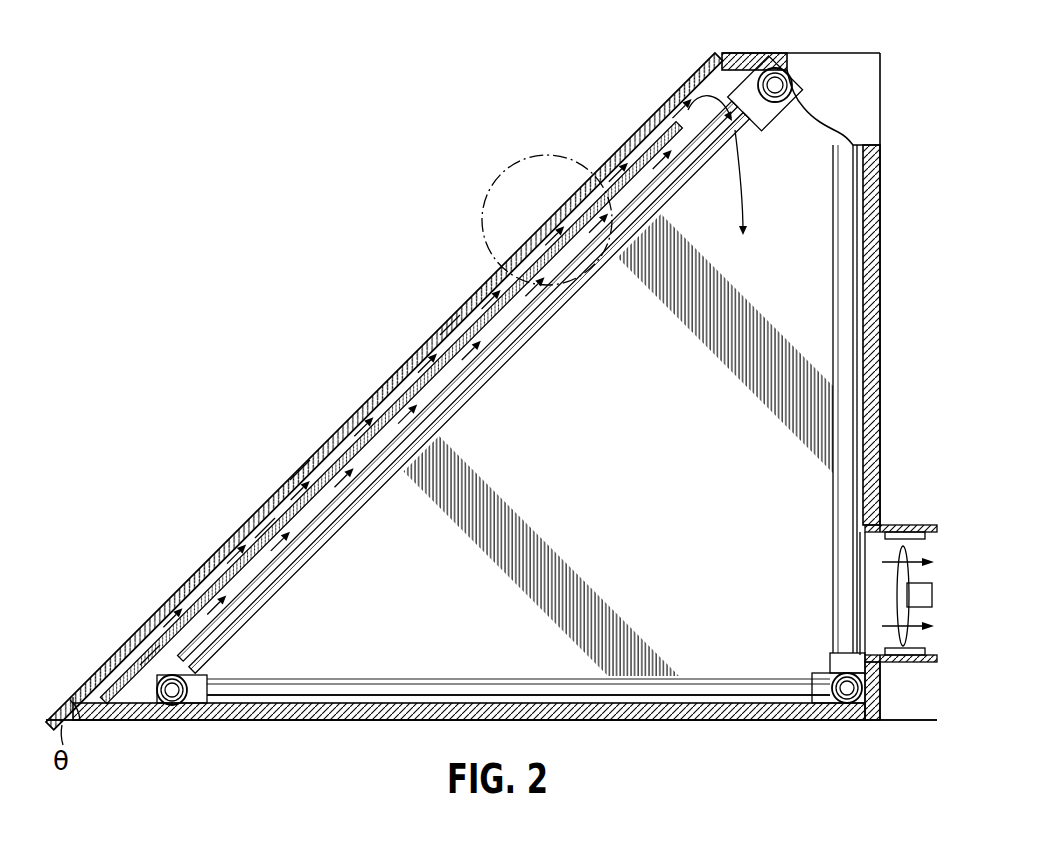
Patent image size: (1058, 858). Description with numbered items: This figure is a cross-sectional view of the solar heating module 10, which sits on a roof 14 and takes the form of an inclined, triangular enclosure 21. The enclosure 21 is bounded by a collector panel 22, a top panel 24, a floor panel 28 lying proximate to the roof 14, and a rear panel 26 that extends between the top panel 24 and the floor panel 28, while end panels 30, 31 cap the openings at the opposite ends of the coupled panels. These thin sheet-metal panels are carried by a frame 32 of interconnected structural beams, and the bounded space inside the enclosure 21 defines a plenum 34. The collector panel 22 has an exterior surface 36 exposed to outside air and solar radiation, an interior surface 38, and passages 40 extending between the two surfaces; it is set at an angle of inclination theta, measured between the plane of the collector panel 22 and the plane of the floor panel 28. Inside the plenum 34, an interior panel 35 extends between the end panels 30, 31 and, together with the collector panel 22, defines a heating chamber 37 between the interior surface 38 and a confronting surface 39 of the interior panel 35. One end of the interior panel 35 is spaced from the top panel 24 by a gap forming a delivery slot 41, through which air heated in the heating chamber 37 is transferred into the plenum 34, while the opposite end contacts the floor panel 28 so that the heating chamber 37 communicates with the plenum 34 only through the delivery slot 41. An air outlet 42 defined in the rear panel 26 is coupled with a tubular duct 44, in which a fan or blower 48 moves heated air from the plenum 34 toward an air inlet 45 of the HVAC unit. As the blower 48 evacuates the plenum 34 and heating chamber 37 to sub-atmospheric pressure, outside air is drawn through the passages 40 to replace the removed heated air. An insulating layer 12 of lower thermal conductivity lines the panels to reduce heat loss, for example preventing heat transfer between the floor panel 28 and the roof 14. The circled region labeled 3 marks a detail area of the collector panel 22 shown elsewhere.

The solar heating module 10 is at (266, 166).
The detail view circle 3 is at (548, 155).
The insulating layer 12 is at (752, 63).
The roof 14 is at (905, 720).
The enclosure 21 is at (450, 330).
The collector panel 22 is at (350, 438).
The top panel 24 is at (775, 62).
The rear panel 26 is at (880, 297).
The floor panel 28 is at (508, 715).
The end panel 30 is at (858, 104).
The end panel 31 is at (784, 290).
The frame 32 is at (738, 183).
The plenum 34 is at (804, 161).
The interior panel 35 is at (317, 527).
The exterior surface 36 is at (265, 528).
The heating chamber 37 is at (300, 470).
The interior surface 38 is at (477, 363).
The surface 39 is at (150, 655).
The passages 40 is at (432, 362).
The delivery slot 41 is at (668, 128).
The air outlet 42 is at (860, 540).
The tubular duct 44 is at (900, 525).
The air inlet 45 is at (862, 650).
The fan or blower 48 is at (900, 598).